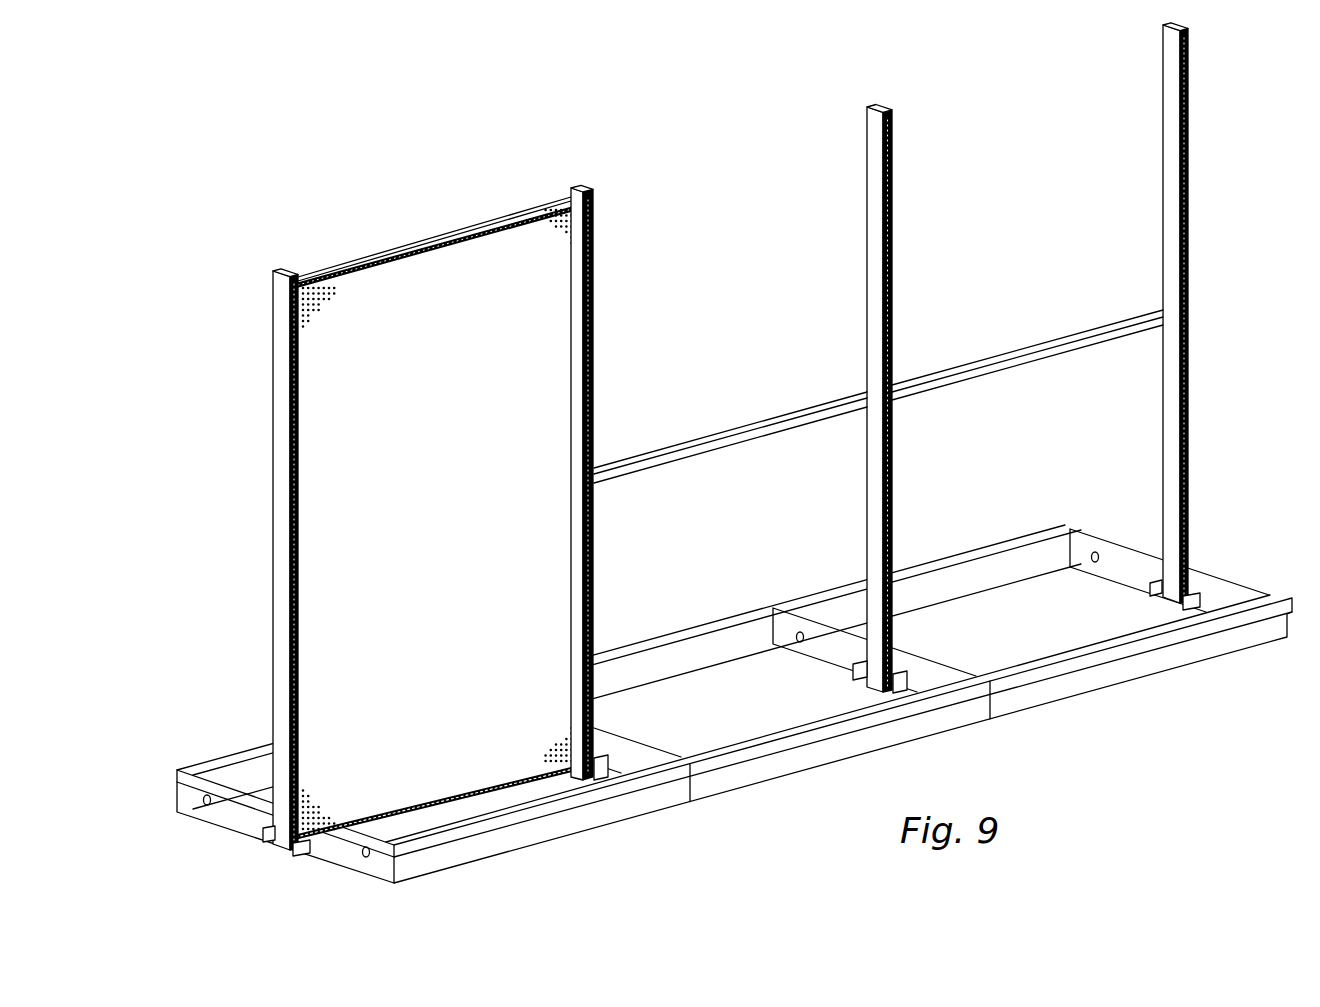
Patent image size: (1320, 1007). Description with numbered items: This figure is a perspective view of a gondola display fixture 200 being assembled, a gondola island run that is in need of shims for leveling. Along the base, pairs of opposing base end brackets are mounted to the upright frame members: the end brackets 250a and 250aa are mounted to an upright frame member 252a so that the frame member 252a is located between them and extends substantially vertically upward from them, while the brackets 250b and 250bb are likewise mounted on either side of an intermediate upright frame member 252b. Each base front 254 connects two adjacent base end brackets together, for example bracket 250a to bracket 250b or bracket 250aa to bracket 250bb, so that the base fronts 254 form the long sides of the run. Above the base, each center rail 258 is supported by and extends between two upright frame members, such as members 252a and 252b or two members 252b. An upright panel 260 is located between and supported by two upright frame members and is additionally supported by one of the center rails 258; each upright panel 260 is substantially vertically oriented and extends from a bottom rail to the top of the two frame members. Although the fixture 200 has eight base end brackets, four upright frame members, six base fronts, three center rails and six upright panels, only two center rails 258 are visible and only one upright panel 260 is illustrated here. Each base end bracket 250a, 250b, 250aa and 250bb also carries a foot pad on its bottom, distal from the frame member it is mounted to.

The gondola display fixture 200 is at (346, 127).
The upright frame member 252a is at (283, 505).
The upright frame member 252b is at (597, 315).
The base front 254 is at (935, 578).
The center rail 258 is at (1000, 370).
The upright panel 260 is at (447, 272).
The base end bracket 250a is at (342, 848).
The base end bracket 250aa is at (232, 808).
The base end bracket 250b is at (590, 760).
The base end bracket 250bb is at (812, 652).